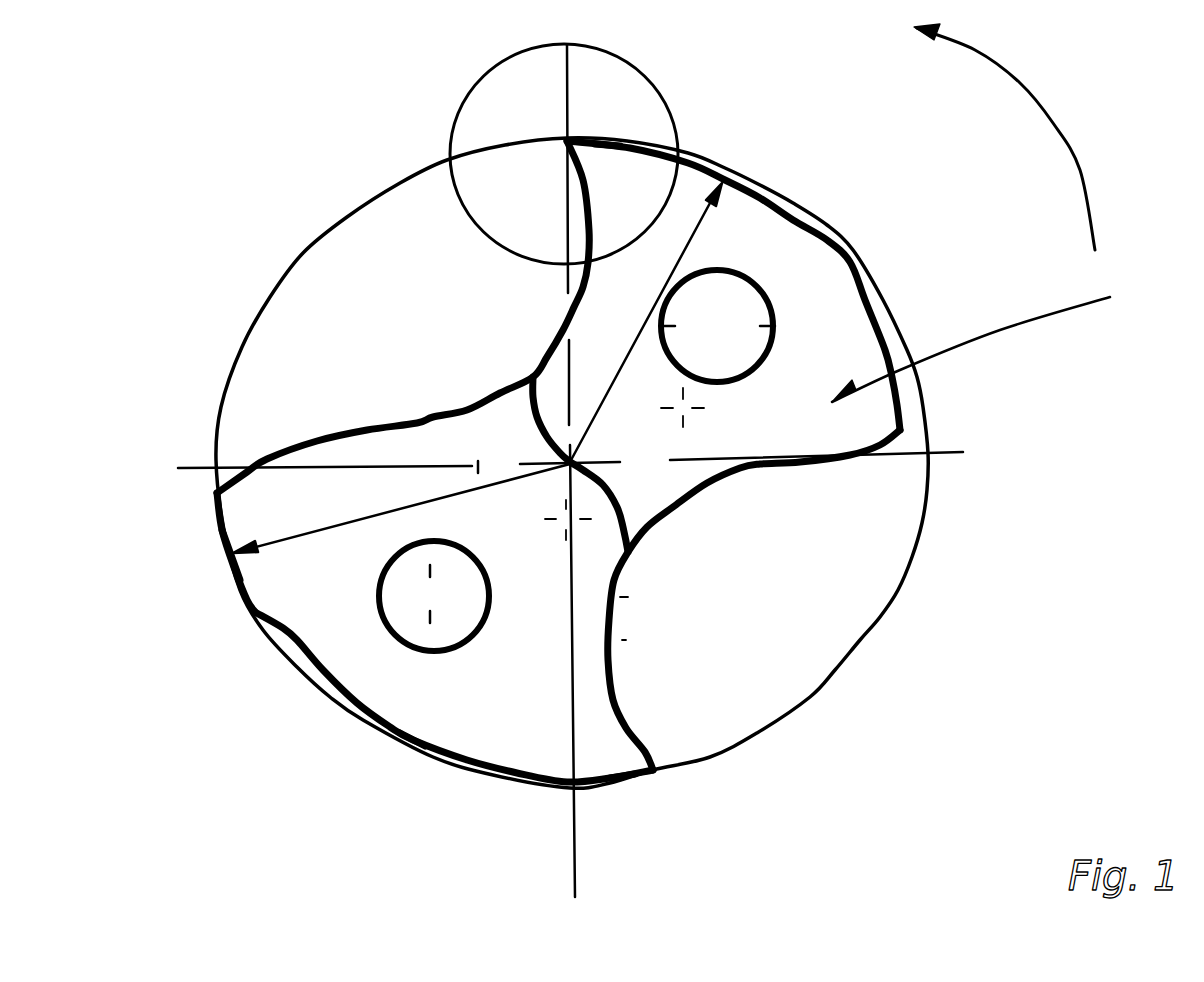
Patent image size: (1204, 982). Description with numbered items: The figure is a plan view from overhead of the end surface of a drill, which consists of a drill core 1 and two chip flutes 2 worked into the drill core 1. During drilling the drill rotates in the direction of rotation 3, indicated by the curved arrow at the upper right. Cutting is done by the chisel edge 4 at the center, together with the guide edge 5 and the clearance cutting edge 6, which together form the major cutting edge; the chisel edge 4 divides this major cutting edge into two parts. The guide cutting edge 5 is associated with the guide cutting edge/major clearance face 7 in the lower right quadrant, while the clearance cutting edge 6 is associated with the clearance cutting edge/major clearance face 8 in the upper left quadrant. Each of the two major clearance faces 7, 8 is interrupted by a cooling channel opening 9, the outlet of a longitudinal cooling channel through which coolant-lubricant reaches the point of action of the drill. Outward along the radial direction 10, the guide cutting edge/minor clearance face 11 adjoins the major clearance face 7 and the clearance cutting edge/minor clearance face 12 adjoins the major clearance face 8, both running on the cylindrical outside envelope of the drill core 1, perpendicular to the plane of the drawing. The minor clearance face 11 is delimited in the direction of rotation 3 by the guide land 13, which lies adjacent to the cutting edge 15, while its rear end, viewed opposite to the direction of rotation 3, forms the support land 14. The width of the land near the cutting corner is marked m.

The drill core 1 is at (1048, 318).
The chip flutes 2 is at (363, 305).
The direction of rotation 3 is at (1053, 125).
The chisel edge 4 is at (620, 488).
The guide edge 5 is at (614, 672).
The clearance cutting edge 6 is at (568, 305).
The guide cutting edge/major clearance face 7 is at (523, 708).
The clearance cutting edge/major clearance face 8 is at (828, 363).
The cooling channel opening 9 is at (728, 341).
The radial direction 10 is at (640, 328).
The guide cutting edge/minor clearance face 11 is at (412, 743).
The clearance cutting edge/minor clearance face 12 is at (607, 141).
The guide land 13 is at (623, 785).
The support land 14 is at (228, 566).
The cutting edge 15 is at (566, 138).
The margin width m is at (683, 120).